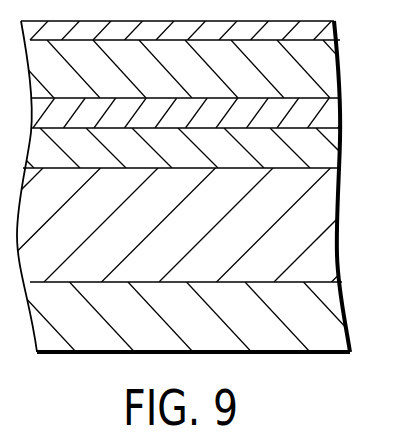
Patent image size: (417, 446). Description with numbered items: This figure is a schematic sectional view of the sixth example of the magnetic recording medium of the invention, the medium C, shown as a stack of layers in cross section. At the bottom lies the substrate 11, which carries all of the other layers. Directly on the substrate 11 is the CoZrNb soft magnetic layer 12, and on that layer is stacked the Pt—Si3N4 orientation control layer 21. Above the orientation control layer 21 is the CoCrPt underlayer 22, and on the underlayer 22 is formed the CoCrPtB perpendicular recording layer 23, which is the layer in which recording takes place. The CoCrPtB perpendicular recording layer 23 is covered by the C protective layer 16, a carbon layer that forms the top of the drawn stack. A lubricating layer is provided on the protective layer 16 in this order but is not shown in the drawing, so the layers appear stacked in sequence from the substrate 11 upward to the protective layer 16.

The substrate 11 is at (322, 329).
The CoZrNb soft magnetic layer 12 is at (320, 249).
The Pt—Si3N4 orientation control layer 21 is at (320, 159).
The CoCrPt underlayer 22 is at (320, 116).
The CoCrPtB perpendicular recording layer 23 is at (320, 76).
The C protective layer 16 is at (320, 32).